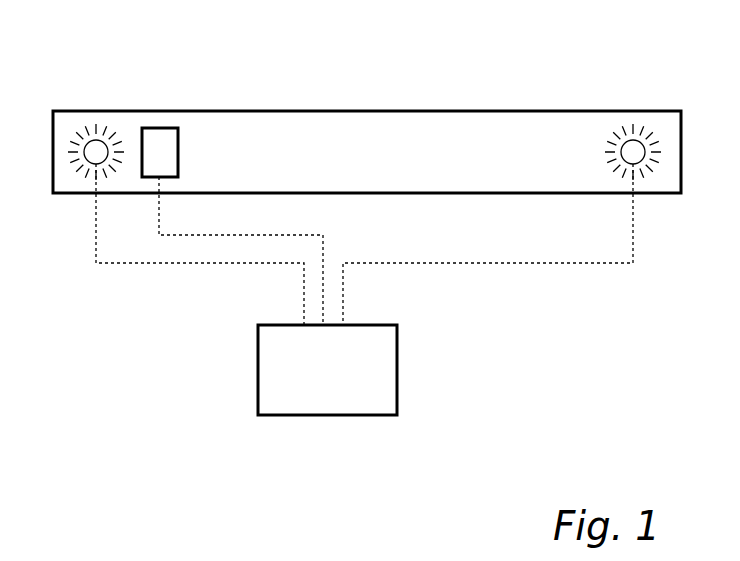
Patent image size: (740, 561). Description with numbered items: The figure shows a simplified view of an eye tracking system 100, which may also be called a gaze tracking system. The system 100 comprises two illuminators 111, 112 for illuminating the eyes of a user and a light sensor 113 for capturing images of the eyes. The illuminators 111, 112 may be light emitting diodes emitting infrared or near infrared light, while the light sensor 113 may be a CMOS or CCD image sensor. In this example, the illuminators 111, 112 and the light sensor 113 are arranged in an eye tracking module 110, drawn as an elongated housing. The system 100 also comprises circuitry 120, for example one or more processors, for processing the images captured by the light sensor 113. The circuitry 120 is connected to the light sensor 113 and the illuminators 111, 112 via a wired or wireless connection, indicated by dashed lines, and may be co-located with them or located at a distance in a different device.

The eye tracking system 100 is at (102, 385).
The eye tracking module 110 is at (313, 110).
The illuminator 111 is at (96, 150).
The illuminator 112 is at (633, 150).
The light sensor 113 is at (152, 138).
The circuitry 120 is at (313, 400).